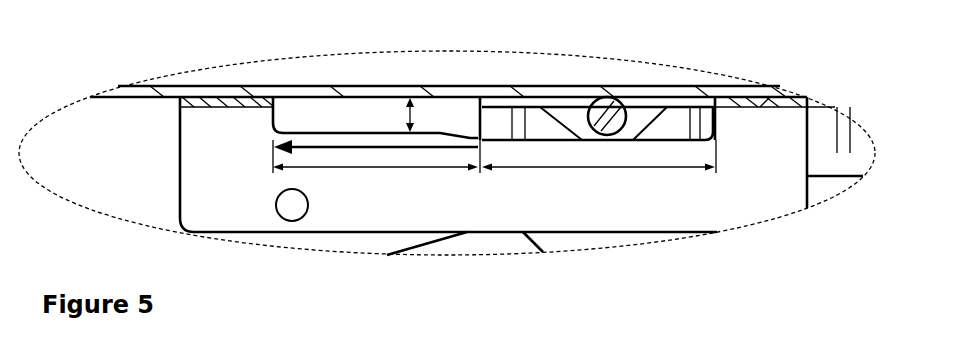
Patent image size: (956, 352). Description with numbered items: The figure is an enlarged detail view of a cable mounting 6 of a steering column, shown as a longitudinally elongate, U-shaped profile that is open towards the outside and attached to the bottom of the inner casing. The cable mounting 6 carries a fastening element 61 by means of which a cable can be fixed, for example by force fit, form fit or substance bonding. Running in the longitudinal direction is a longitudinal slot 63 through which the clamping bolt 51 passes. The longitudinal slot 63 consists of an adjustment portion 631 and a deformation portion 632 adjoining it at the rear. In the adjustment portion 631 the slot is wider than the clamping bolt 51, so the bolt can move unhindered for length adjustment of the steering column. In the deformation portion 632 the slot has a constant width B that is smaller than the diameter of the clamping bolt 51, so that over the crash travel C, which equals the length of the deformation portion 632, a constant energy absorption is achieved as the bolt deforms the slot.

The cable mounting 6 is at (218, 178).
The fastening element 61 is at (292, 210).
The longitudinal slot 63 is at (494, 156).
The adjustment portion 631 is at (612, 168).
The deformation portion 632 is at (367, 170).
The clamping bolt 51 is at (617, 100).
The width of the deformation portion B is at (407, 110).
The crash travel C is at (382, 146).